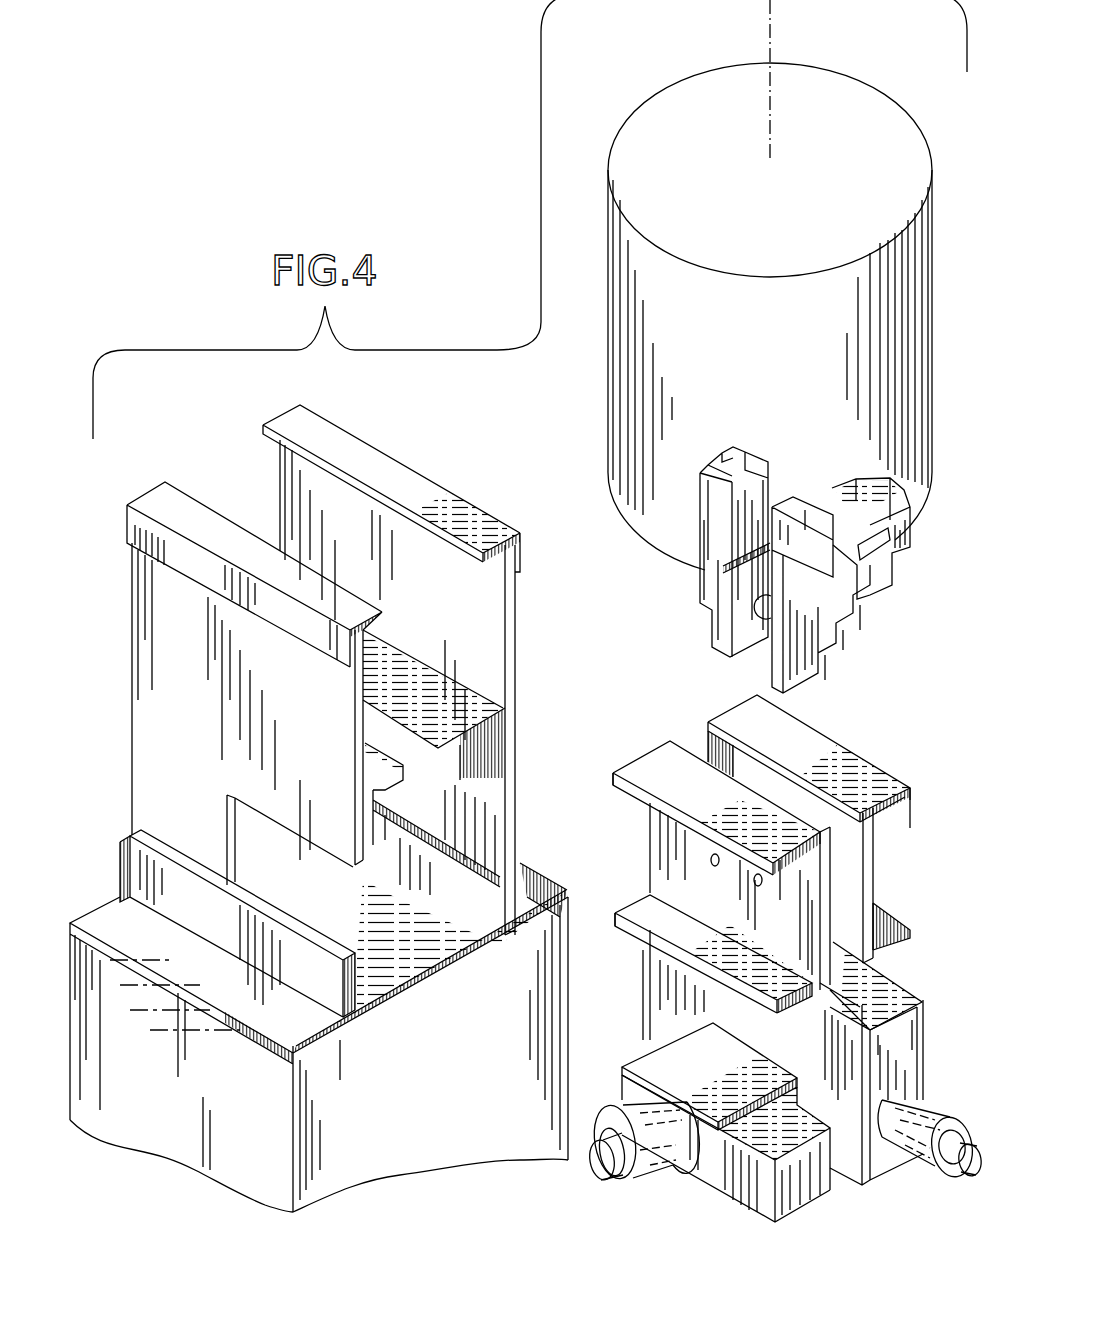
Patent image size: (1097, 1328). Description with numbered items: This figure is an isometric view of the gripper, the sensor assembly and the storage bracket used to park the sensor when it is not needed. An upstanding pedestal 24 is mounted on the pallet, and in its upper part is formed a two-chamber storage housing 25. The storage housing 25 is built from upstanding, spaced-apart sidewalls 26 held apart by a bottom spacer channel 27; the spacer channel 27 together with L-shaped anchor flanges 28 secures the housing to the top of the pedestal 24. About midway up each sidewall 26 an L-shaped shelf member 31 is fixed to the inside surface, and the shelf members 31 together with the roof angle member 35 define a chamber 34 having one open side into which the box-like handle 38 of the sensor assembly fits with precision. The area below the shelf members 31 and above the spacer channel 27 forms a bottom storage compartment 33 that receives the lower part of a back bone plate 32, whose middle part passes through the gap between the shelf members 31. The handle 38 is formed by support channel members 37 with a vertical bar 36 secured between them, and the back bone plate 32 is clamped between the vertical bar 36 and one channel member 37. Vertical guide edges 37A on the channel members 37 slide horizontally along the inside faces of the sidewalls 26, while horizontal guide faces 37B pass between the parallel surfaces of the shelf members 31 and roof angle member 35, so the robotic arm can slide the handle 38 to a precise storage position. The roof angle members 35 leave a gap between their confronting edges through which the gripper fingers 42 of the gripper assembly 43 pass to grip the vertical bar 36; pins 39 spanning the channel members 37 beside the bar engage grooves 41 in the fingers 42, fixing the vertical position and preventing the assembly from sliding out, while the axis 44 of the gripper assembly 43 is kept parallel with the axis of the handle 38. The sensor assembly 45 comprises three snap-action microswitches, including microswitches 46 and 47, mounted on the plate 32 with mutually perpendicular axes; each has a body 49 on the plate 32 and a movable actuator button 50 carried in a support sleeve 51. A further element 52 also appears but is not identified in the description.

The pedestal 24 is at (203, 1172).
The storage housing 25 is at (323, 670).
The sidewalls 26 is at (300, 690).
The bottom spacer channel 27 is at (440, 973).
The L-shaped anchor flanges 28 is at (218, 1005).
The L-shaped shelf member 31 is at (390, 785).
The back bone plate 32 is at (877, 957).
The bottom storage compartment 33 is at (486, 834).
The chamber 34 is at (486, 662).
The roof angle member 35 is at (160, 495).
The vertical bar 36 is at (707, 745).
The support channel members 37 is at (740, 925).
The vertical guide edges 37A is at (624, 788).
The horizontal guide faces 37B is at (697, 791).
The box-like handle 38 is at (842, 748).
The pins 39 is at (711, 864).
The grooves 41 is at (720, 580).
The gripper fingers 42 is at (770, 667).
The gripper assembly 43 is at (912, 546).
The axis 44 is at (770, 47).
The sensor assembly 45 is at (892, 1175).
The snap-action microswitch 46 is at (726, 1194).
The snap-action microswitch 47 is at (925, 1032).
The body 49 is at (815, 1190).
The movable actuator button 50 is at (590, 1180).
The support sleeve 51 is at (660, 1167).
The cover plate 52 is at (717, 1071).